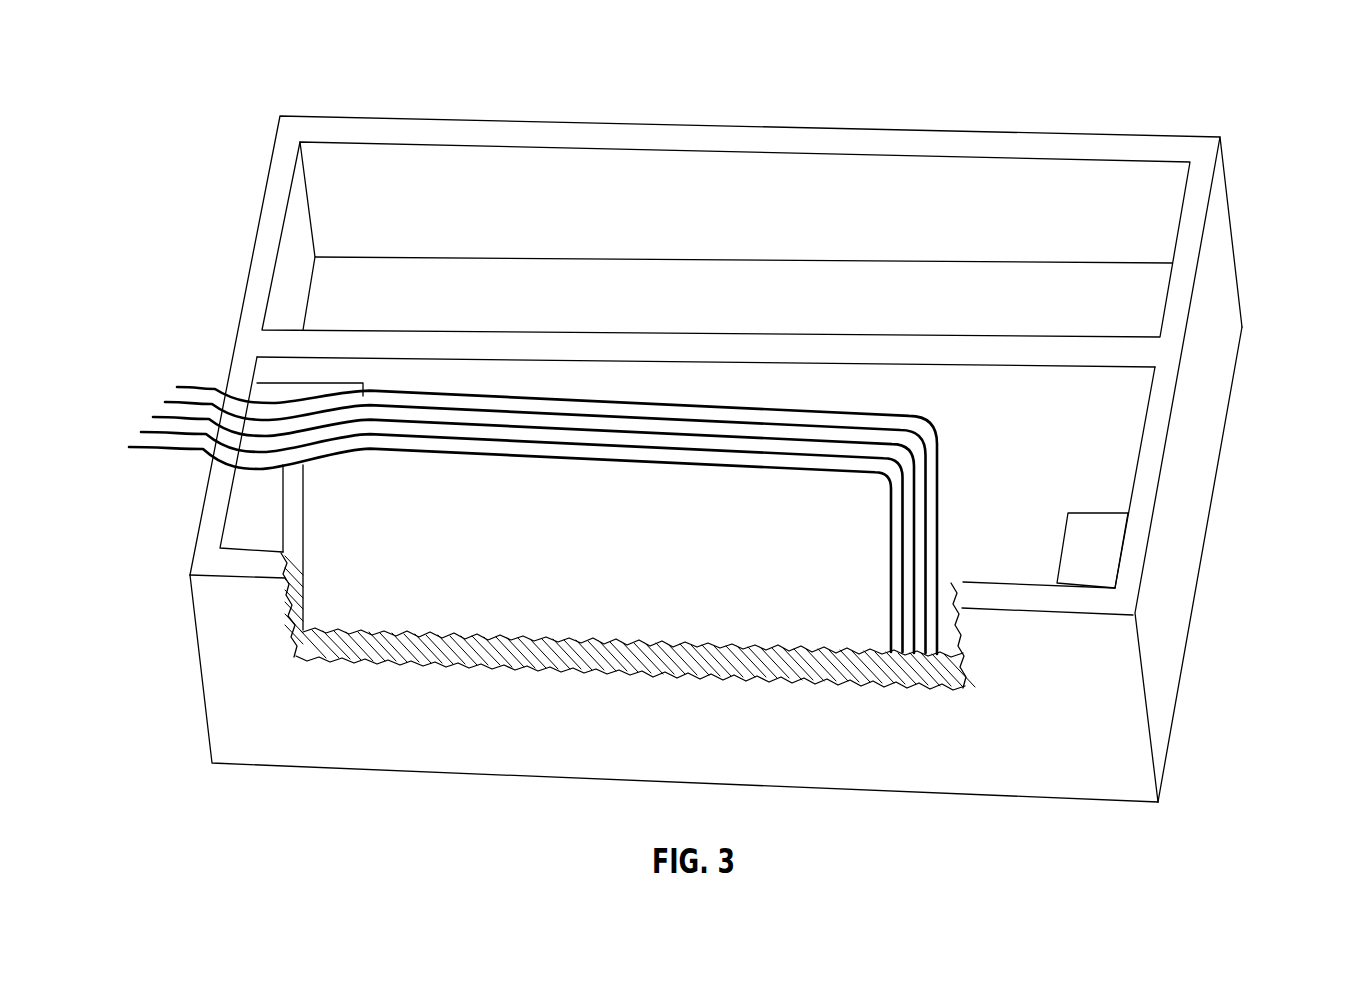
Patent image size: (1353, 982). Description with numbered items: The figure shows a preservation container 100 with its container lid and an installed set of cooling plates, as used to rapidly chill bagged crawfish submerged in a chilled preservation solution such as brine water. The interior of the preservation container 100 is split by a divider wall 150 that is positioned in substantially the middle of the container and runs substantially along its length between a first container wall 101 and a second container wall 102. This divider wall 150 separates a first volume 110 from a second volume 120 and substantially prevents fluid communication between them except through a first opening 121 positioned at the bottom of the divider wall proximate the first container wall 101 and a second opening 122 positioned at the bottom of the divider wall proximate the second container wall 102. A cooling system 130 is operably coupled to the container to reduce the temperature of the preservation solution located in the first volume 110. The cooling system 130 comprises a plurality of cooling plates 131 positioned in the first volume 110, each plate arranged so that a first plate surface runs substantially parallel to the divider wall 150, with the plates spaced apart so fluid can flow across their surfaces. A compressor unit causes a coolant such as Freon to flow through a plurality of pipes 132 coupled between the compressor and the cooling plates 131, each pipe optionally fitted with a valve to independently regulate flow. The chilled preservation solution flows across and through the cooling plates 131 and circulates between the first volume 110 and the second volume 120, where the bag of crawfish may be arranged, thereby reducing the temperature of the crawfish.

The preservation container 100 is at (397, 117).
The first container wall 101 is at (300, 272).
The second container wall 102 is at (1180, 212).
The first volume 110 is at (1117, 433).
The second volume 120 is at (630, 282).
The first opening 121 is at (1103, 545).
The second opening 122 is at (317, 398).
The cooling system 130 is at (300, 853).
The plurality of cooling plates 131 is at (518, 563).
The plurality of pipes 132 is at (117, 360).
The divider wall 150 is at (988, 350).